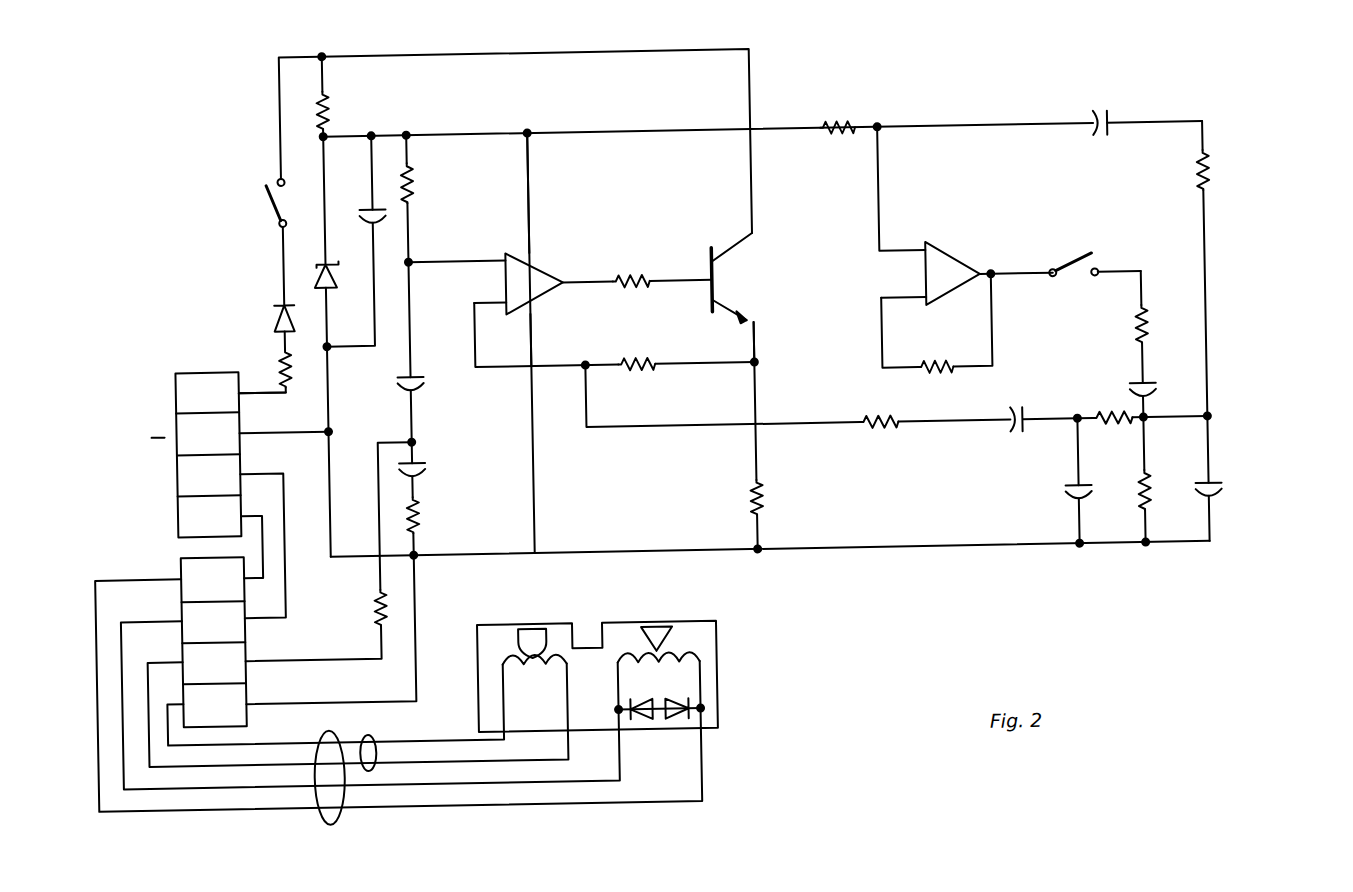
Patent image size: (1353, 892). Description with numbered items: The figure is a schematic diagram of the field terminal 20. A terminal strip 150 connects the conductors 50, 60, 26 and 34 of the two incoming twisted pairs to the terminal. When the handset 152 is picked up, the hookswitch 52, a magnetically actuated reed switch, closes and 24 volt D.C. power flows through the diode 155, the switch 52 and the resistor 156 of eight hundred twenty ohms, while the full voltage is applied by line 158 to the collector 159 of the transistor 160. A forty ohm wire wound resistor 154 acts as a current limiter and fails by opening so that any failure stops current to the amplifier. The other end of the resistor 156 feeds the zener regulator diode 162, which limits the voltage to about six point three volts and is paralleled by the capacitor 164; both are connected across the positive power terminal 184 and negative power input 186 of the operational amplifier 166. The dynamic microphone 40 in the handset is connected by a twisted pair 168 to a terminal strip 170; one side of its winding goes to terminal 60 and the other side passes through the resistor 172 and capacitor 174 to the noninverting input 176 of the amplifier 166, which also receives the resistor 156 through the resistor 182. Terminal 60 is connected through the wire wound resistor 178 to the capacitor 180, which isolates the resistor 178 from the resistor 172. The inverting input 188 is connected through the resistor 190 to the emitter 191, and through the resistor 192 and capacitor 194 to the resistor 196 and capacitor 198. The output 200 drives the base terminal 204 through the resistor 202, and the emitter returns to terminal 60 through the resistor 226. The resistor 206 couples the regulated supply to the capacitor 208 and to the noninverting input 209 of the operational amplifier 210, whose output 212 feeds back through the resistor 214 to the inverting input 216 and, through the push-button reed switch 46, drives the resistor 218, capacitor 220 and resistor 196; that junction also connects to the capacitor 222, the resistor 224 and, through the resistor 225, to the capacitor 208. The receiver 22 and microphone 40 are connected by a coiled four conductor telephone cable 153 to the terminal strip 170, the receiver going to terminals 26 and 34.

The line 158 is at (590, 47).
The resistor 156 is at (347, 85).
The hookswitch 52 is at (269, 174).
The diode 155 is at (275, 311).
The wire wound resistor 154 is at (302, 364).
The zener regulator diode 162 is at (277, 258).
The capacitor 164 is at (360, 207).
The terminal strip 150 is at (198, 360).
The conductor 50 is at (176, 370).
The terminal 60 is at (176, 436).
The terminal 26 is at (176, 466).
The terminal 34 is at (176, 509).
The terminal strip 170 is at (210, 549).
The coiled four conductor telephone cable 153 is at (349, 811).
The twisted pair 168 is at (366, 739).
The resistor 172 is at (373, 619).
The resistor 182 is at (427, 166).
The capacitor 174 is at (428, 386).
The capacitor 180 is at (431, 466).
The wire wound resistor 178 is at (439, 496).
The operational amplifier 166 is at (571, 228).
The noninverting input 176 is at (505, 256).
The inverting input 188 is at (505, 297).
The positive power terminal 184 is at (537, 177).
The negative power input 186 is at (538, 307).
The output 200 is at (567, 286).
The resistor 202 is at (658, 268).
The resistor 190 is at (641, 355).
The transistor 160 is at (749, 259).
The collector 159 is at (723, 257).
The base terminal 204 is at (703, 280).
The emitter 191 is at (728, 313).
The resistor 226 is at (748, 490).
The resistor 192 is at (880, 438).
The capacitor 194 is at (1008, 451).
The resistor 196 is at (1109, 437).
The capacitor 198 is at (1060, 500).
The resistor 224 is at (1137, 497).
The capacitor 222 is at (1217, 495).
The capacitor 220 is at (1160, 393).
The resistor 218 is at (1166, 310).
The resistor 225 is at (1202, 174).
The capacitor 208 is at (1099, 112).
The resistor 206 is at (840, 150).
The output 212 is at (986, 277).
The noninverting input 209 is at (927, 254).
The operational amplifier 210 is at (928, 269).
The inverting input 216 is at (928, 292).
The resistor 214 is at (925, 373).
The switch 46 is at (1100, 268).
The receiver 22 is at (684, 647).
The microphone 40 is at (499, 648).
The clipping diodes 24 is at (655, 698).
The handset 152 is at (721, 712).
The field terminal 20 is at (912, 616).